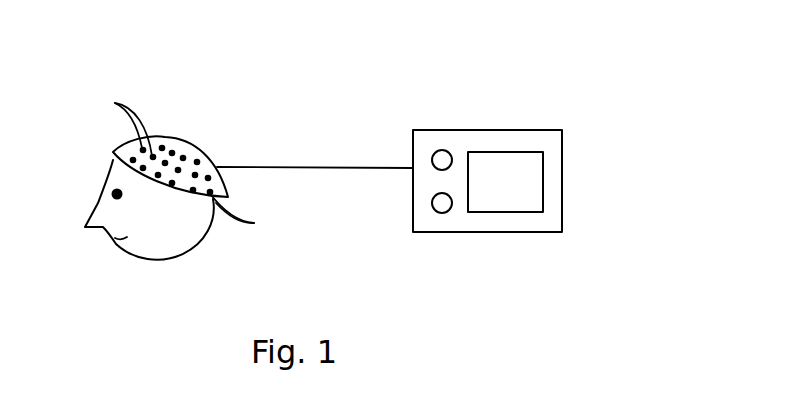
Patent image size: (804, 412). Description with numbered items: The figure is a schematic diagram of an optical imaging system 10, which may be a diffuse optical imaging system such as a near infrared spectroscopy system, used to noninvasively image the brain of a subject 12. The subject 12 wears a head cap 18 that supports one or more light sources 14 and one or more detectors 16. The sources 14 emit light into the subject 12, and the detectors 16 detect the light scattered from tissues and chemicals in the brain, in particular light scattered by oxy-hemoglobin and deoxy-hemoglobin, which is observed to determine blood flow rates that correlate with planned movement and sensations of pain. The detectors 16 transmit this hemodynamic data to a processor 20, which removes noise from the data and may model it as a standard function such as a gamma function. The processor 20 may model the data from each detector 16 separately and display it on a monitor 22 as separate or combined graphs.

The optical imaging system 10 is at (440, 82).
The subject 12 is at (137, 260).
The source 14 is at (117, 122).
The detector 16 is at (254, 223).
The head cap 18 is at (112, 152).
The processor 20 is at (458, 233).
The monitor 22 is at (503, 213).